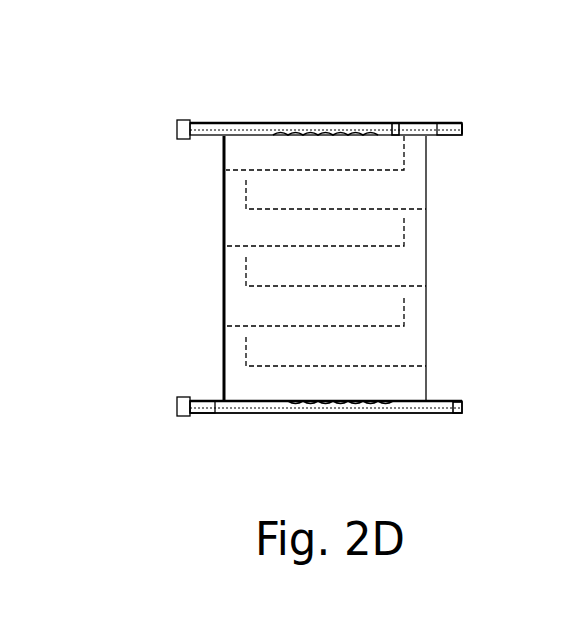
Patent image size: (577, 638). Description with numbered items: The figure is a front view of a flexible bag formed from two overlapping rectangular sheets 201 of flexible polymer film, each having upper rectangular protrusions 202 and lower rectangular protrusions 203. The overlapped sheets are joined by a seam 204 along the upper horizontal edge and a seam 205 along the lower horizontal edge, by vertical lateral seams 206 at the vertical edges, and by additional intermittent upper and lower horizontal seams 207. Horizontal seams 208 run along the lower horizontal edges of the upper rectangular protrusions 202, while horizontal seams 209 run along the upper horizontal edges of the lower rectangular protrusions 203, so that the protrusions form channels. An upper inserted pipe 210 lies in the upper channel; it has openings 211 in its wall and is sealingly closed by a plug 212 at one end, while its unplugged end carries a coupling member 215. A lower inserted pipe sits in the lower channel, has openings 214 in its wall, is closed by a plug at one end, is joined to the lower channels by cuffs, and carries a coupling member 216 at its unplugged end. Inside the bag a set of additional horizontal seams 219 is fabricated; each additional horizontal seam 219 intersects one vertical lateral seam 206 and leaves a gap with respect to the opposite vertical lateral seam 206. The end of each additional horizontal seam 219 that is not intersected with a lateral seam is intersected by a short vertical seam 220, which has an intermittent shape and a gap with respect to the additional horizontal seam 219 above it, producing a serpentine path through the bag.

The rectangular sheets 201 is at (243, 228).
The upper rectangular protrusions 202 is at (218, 123).
The lower rectangular protrusions 203 is at (220, 400).
The seam 204 is at (253, 122).
The seam 205 is at (262, 414).
The vertical lateral seams 206 is at (428, 256).
The intermittent upper and lower horizontal seams 207 is at (280, 134).
The horizontal seams 208 is at (285, 402).
The horizontal seams / plug 209 is at (402, 123).
The upper inserted pipe 210 is at (462, 131).
The openings 211 is at (338, 133).
The plug / cuffs 212 is at (437, 124).
The openings 214 is at (343, 403).
The coupling member 215 is at (175, 128).
The coupling member 216 is at (176, 407).
The additional horizontal seams 219 is at (403, 211).
The short vertical seams 220 is at (405, 308).